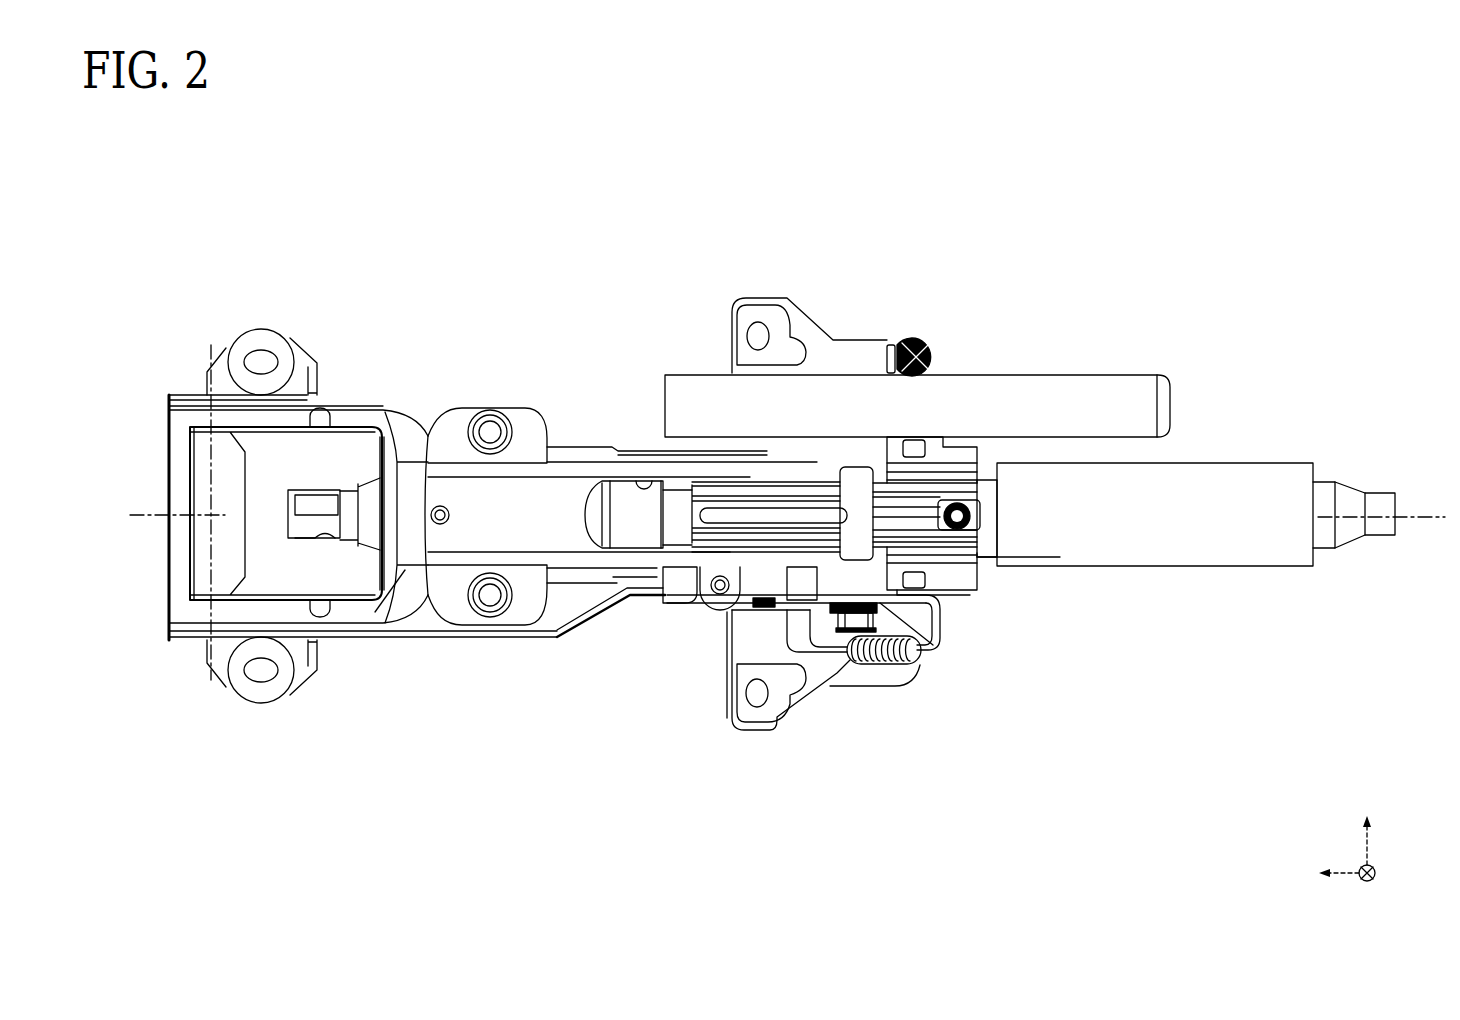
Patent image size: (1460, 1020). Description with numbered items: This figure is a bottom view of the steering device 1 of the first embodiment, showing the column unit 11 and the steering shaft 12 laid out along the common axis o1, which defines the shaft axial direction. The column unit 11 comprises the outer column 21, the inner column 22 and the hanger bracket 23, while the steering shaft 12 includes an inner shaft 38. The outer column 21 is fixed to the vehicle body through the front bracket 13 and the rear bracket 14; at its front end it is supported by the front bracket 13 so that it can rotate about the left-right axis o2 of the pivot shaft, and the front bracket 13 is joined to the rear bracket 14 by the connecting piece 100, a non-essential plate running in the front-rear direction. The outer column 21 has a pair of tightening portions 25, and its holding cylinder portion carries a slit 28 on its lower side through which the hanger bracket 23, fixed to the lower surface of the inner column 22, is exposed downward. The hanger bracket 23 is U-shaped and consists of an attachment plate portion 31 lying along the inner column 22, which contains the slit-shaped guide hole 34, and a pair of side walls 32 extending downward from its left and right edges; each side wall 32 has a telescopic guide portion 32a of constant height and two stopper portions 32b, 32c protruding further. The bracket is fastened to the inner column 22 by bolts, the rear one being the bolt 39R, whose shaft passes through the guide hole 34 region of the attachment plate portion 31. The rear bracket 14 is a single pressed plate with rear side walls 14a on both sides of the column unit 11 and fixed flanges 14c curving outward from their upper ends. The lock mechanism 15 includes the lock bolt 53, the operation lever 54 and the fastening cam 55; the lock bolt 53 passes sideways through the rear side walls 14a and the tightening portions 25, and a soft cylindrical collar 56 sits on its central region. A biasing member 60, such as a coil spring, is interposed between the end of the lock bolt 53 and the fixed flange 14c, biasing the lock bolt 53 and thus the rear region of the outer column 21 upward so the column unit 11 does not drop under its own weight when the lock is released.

The steering device 1 is at (787, 545).
The column unit 11 is at (869, 605).
The steering shaft 12 is at (1347, 533).
The front bracket 13 is at (262, 461).
The rear bracket 14 is at (785, 556).
The rear side wall 14a is at (803, 641).
The fixed flange 14c is at (832, 340).
The lock mechanism 15 is at (790, 663).
The outer column 21 is at (643, 573).
The inner column 22 is at (1155, 602).
The hanger bracket 23 is at (935, 578).
The tightening portion 25 is at (726, 465).
The slit 28 is at (650, 480).
The attachment plate portion 31 is at (993, 505).
The side wall 32 is at (866, 527).
The telescopic guide portion 32a is at (871, 478).
The stopper portion 32b is at (709, 472).
The stopper portion 32c is at (984, 478).
The guide hole 34 is at (991, 583).
The inner shaft 38 is at (1357, 573).
The bolt 39R is at (985, 545).
The lock bolt 53 is at (845, 656).
The operation lever 54 is at (1055, 373).
The fastening cam 55 is at (810, 612).
The collar 56 is at (793, 460).
The biasing member 60 is at (922, 348).
The connecting piece 100 is at (427, 645).
The axis o1 is at (1410, 512).
The axis o2 is at (207, 354).